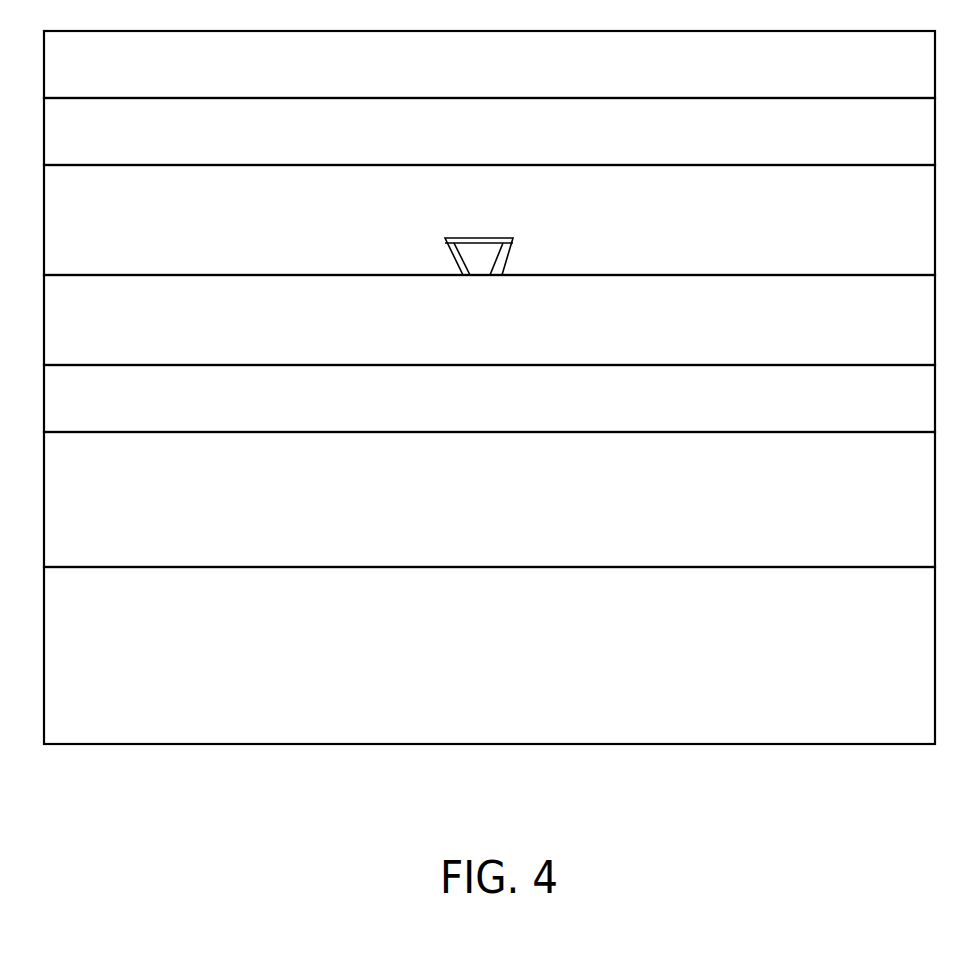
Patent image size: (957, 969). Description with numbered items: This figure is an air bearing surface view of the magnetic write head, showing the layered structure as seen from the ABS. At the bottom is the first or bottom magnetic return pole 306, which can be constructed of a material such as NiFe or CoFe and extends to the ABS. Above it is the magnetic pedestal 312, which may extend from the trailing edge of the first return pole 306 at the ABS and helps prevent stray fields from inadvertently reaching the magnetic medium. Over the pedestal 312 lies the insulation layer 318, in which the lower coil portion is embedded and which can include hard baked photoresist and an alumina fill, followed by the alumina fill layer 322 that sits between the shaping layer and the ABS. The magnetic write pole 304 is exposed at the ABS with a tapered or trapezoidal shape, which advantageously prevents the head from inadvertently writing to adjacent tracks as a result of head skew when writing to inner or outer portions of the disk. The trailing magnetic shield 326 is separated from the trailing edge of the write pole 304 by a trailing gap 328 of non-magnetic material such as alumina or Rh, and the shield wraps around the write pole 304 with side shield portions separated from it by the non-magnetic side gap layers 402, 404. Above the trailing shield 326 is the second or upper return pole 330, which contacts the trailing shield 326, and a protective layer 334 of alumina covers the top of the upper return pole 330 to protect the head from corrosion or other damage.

The magnetic write pole 304 is at (473, 255).
The first or bottom magnetic return pole 306 is at (548, 652).
The magnetic pedestal 312 is at (550, 497).
The insulation layer 318 is at (545, 397).
The alumina fill layer 322 is at (545, 320).
The trailing magnetic shield 326 is at (580, 190).
The trailing gap 328 is at (480, 240).
The second or upper return pole 330 is at (475, 132).
The protective layer 334 is at (490, 73).
The non-magnetic side gap layer 402 is at (507, 253).
The non-magnetic side gap layer 404 is at (450, 257).